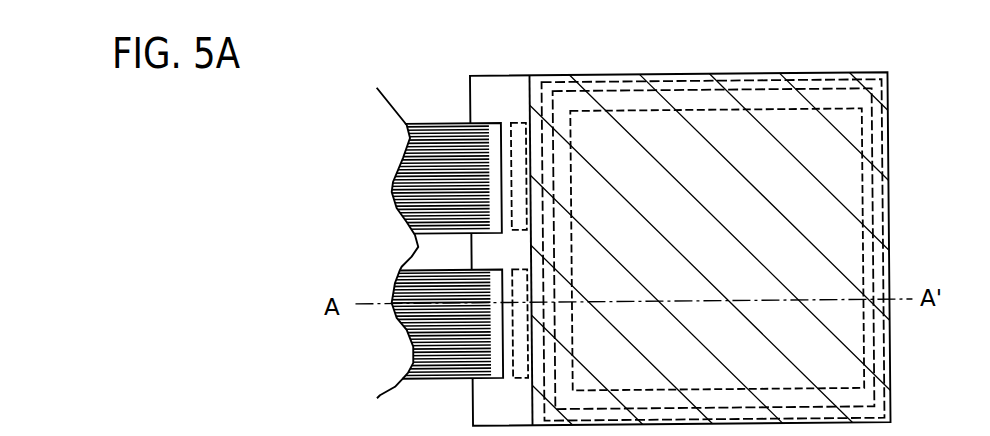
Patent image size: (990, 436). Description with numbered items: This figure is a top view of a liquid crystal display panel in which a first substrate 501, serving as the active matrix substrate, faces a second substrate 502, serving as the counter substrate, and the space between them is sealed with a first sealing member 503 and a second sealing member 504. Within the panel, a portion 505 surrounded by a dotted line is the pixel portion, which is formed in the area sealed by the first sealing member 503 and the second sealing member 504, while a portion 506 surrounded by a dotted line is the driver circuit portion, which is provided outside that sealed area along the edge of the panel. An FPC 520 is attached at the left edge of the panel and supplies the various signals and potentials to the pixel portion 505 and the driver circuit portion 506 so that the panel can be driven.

The first substrate 501 is at (482, 93).
The second substrate 502 is at (508, 84).
The first sealing member 503 is at (879, 160).
The second sealing member 504 is at (873, 248).
The pixel portion 505 is at (853, 357).
The driver circuit portion 506 is at (518, 131).
The FPC 520 is at (427, 377).